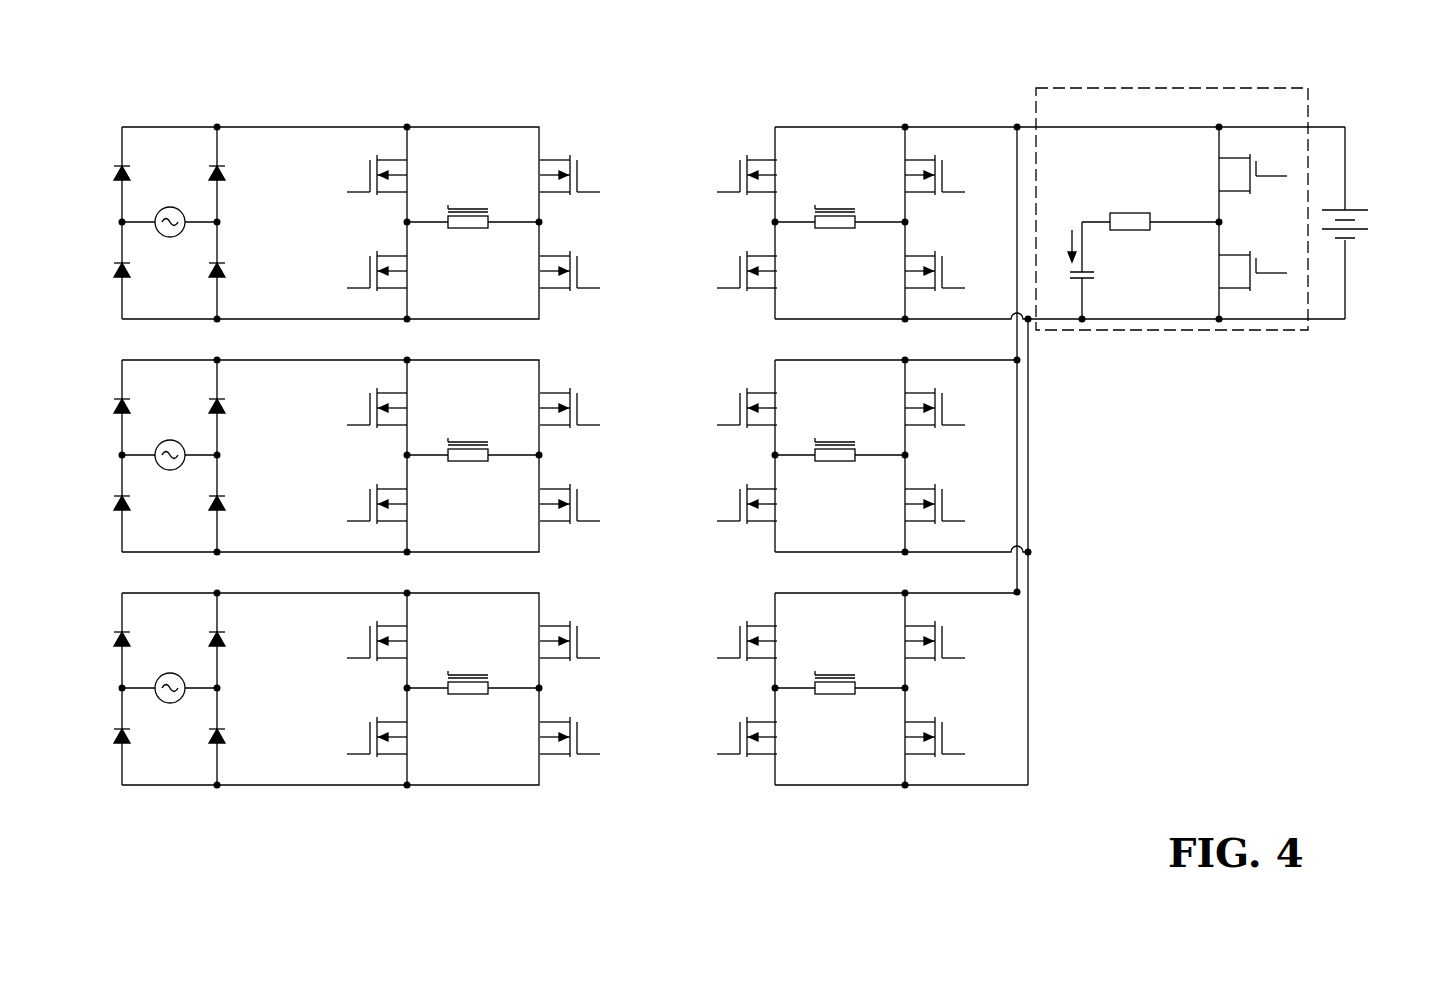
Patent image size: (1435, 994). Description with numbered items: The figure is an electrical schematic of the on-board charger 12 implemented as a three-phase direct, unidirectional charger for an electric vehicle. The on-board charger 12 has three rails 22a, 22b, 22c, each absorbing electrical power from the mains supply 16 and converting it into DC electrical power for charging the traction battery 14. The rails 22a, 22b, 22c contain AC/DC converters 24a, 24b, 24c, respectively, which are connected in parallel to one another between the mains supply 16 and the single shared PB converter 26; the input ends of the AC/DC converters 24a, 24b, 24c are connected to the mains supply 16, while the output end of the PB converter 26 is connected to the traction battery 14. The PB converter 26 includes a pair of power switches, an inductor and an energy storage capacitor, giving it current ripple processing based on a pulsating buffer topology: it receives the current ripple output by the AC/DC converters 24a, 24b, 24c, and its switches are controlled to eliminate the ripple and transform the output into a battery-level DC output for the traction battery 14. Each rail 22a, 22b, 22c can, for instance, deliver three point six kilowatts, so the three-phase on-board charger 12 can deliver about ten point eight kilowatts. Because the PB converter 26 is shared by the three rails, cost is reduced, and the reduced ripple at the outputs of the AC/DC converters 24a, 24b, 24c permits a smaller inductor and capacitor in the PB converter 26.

The on-board charger 12 is at (734, 425).
The traction battery 14 is at (1361, 206).
The mains supply 16 is at (172, 240).
The first rail 22a is at (136, 223).
The second rail 22b is at (120, 436).
The third rail 22c is at (120, 669).
The AC/DC converter 24a is at (417, 124).
The AC/DC converter 24b is at (792, 358).
The AC/DC converter 24c is at (483, 788).
The PB converter 26 is at (1285, 120).